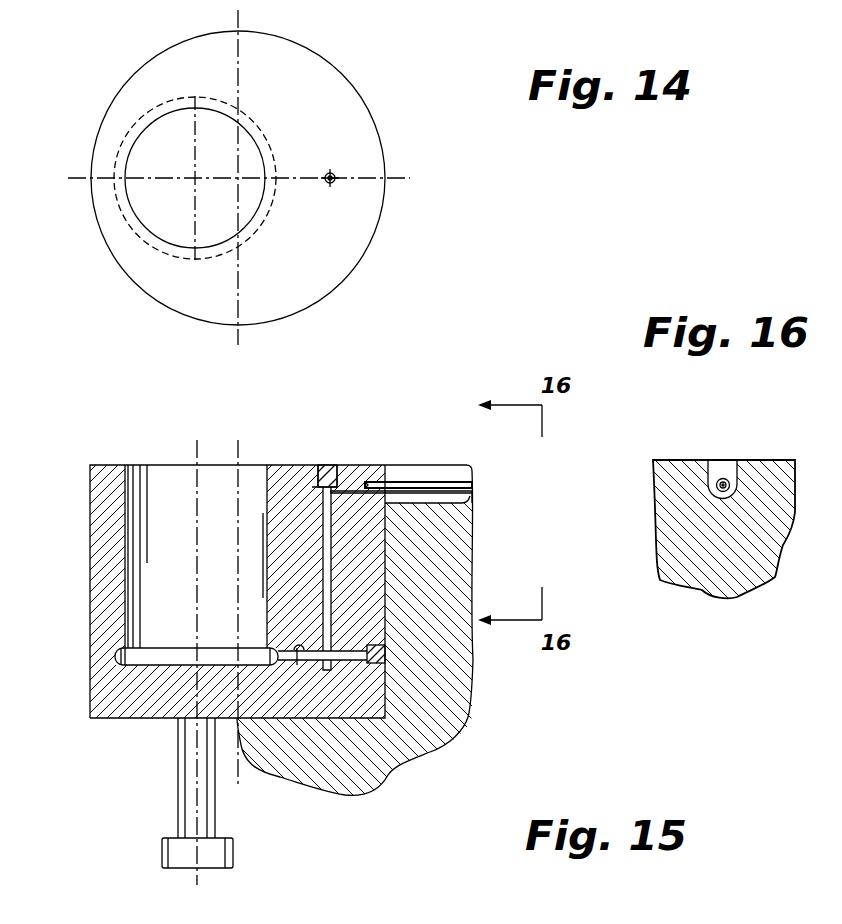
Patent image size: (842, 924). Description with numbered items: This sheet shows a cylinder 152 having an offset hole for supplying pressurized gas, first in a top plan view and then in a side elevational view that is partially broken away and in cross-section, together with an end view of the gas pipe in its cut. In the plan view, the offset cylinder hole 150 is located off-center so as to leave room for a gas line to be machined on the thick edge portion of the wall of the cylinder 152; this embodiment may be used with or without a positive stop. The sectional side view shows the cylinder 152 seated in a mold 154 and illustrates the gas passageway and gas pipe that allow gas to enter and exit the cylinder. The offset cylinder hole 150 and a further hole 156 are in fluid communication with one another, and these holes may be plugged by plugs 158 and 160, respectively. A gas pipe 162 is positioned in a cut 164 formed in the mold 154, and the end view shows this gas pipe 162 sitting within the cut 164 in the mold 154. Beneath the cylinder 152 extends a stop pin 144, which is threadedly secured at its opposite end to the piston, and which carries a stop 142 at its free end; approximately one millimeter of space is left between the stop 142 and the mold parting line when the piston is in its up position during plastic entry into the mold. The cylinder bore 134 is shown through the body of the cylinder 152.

In FIG. 14, the bore 134 is at (262, 150).
In FIG. 15, the bore 134 is at (165, 467).
In FIG. 15, the stop 142 is at (162, 847).
In FIG. 15, the stop pin 144 is at (176, 752).
In FIG. 14, the offset cylinder hole 150 is at (328, 181).
In FIG. 15, the offset cylinder hole 150 is at (322, 508).
In FIG. 14, the cylinder 152 is at (350, 273).
In FIG. 15, the mold 154 is at (445, 713).
In FIG. 15, the hole 156 is at (297, 652).
In FIG. 15, the plug 158 is at (327, 463).
In FIG. 15, the plug 160 is at (393, 668).
In FIG. 15, the gas pipe 162 is at (423, 481).
In FIG. 16, the gas pipe 162 is at (725, 477).
In FIG. 15, the cut 164 is at (476, 492).
In FIG. 16, the cut 164 is at (716, 465).